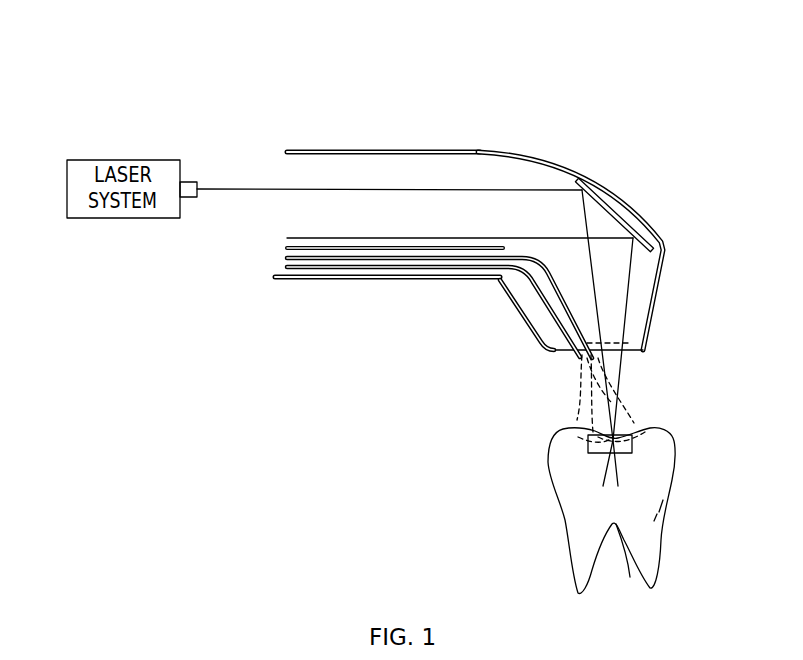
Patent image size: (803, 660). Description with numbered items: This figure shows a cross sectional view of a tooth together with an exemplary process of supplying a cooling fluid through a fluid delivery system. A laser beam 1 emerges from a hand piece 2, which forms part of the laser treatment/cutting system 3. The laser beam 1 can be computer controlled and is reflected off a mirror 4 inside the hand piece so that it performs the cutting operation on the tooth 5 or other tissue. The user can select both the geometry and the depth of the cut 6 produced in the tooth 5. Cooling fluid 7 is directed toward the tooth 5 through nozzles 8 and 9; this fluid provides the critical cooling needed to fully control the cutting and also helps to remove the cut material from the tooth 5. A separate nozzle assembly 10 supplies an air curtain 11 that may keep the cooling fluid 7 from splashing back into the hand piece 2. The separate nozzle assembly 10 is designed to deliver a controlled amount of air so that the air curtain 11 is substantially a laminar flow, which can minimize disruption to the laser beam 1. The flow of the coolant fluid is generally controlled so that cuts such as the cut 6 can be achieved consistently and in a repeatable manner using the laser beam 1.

The laser beam 1 is at (285, 189).
The hand piece 2 is at (402, 163).
The laser treatment/cutting system 3 is at (593, 166).
The mirror 4 is at (619, 212).
The tooth 5 is at (650, 563).
The cut 6 is at (633, 445).
The cooling fluid 7 is at (582, 408).
The nozzle 8 is at (538, 283).
The nozzle 9 is at (542, 305).
The separate nozzle assembly 10 is at (535, 332).
The air curtain 11 is at (637, 355).